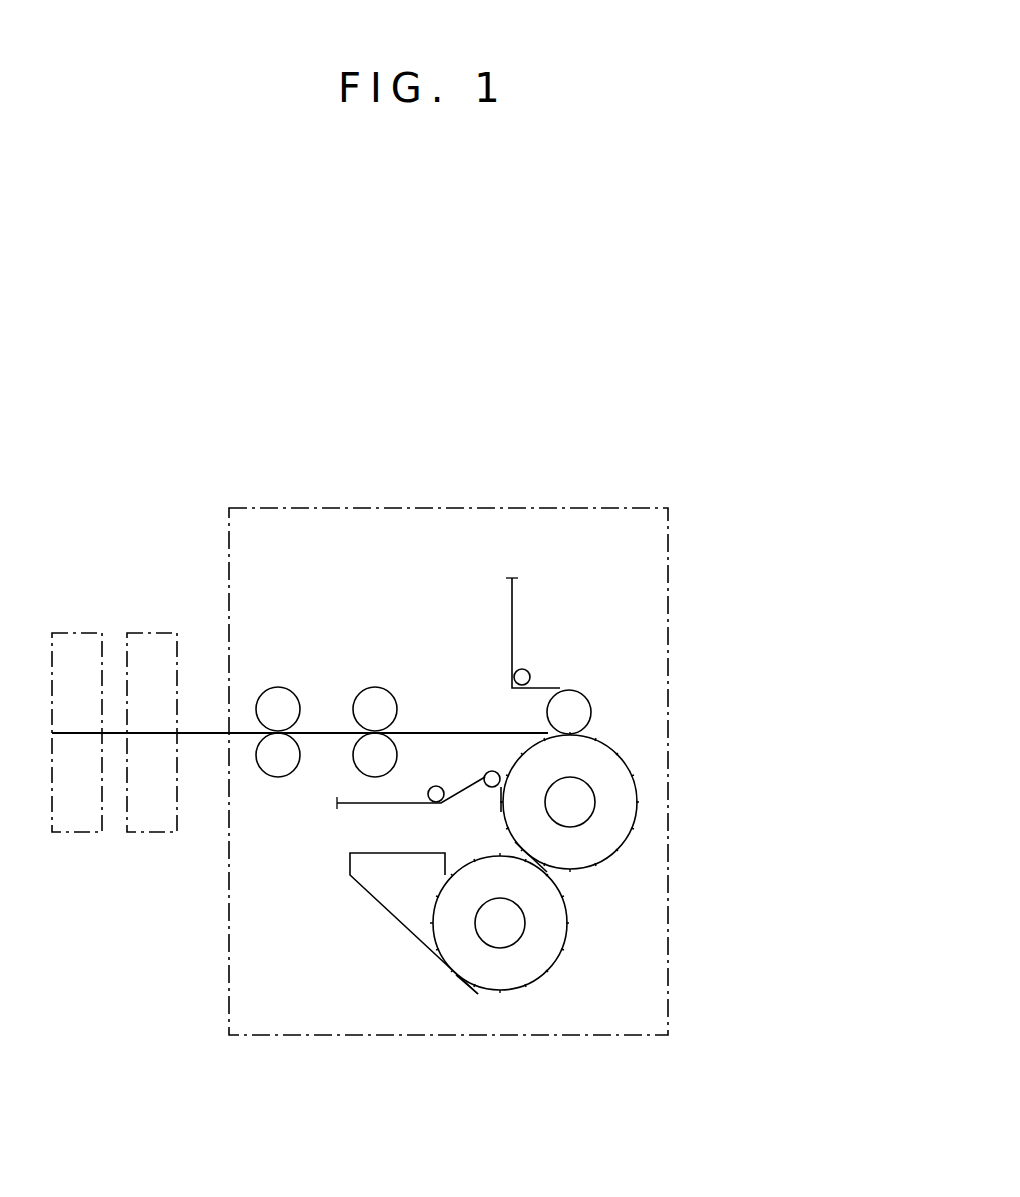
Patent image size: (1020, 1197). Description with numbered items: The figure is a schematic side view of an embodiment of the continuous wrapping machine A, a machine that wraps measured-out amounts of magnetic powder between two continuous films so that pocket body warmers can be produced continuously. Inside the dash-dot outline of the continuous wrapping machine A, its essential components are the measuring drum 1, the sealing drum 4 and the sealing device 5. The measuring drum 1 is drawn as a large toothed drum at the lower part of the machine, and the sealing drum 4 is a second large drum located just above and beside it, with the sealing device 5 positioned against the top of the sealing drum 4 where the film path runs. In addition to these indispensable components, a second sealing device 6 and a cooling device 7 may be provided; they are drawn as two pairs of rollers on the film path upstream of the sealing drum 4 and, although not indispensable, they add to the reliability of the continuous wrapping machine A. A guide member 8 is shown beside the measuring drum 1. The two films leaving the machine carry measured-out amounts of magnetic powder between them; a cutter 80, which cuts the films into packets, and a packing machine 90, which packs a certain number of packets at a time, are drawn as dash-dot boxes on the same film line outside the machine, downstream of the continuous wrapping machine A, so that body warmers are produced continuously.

The continuous wrapping machine A is at (552, 508).
The packing machine 90 is at (93, 633).
The cutter 80 is at (168, 633).
The cooling device 7 is at (284, 672).
The second sealing device 6 is at (384, 672).
The sealing device 5 is at (589, 678).
The sealing drum 4 is at (647, 756).
The measuring drum 1 is at (574, 925).
The guide 8 is at (398, 929).